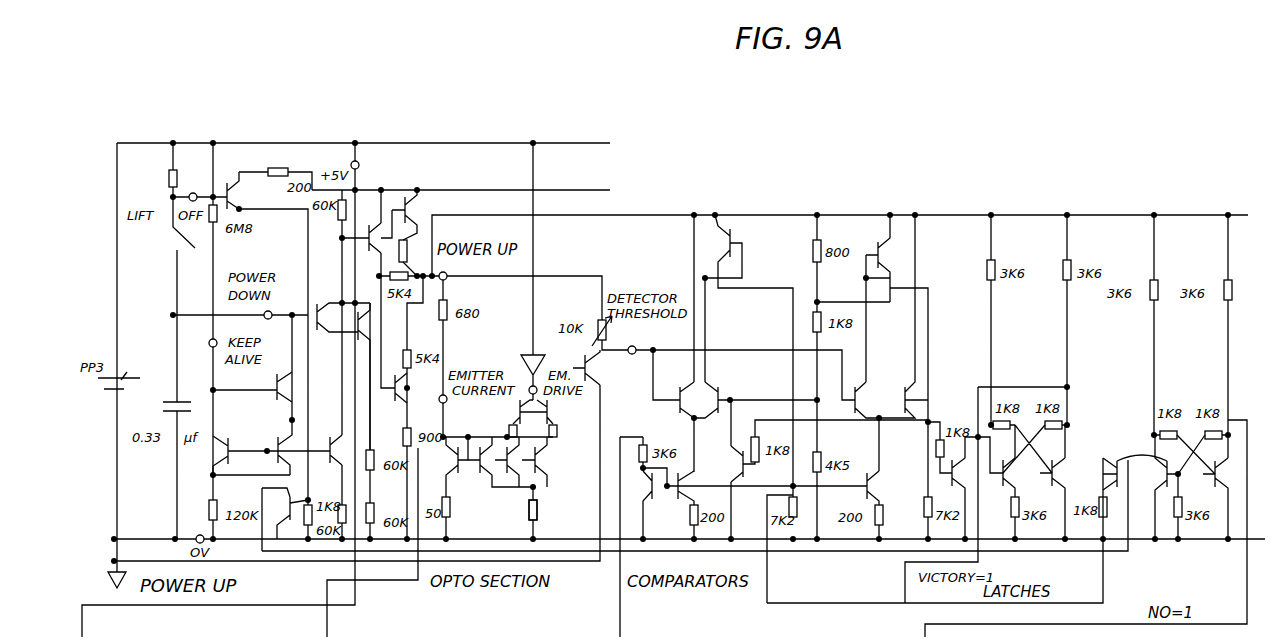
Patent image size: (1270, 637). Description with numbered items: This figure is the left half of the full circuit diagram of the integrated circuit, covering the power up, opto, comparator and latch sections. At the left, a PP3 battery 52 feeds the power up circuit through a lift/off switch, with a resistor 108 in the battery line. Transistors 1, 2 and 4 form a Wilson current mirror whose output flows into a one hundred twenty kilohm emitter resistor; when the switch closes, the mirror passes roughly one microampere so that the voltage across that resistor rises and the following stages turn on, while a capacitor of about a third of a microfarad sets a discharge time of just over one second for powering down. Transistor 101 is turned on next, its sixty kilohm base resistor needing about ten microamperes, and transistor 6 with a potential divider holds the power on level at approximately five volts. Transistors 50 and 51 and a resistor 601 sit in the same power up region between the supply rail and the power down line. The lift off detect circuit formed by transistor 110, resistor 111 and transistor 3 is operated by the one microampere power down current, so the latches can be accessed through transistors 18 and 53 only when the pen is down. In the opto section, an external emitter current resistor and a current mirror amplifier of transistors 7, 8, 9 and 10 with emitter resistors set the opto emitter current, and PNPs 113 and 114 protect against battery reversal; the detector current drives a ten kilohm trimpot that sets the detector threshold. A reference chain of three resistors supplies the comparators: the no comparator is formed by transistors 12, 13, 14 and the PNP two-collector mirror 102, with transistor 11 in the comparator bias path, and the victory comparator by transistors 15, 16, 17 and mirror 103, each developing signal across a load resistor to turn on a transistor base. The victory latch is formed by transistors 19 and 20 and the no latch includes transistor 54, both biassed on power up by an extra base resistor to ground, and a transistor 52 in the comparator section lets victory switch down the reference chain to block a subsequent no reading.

The transistor 1 is at (288, 387).
The transistor 2 is at (216, 455).
The transistor 3 is at (285, 519).
The transistor 4 is at (310, 447).
The transistor 6 is at (392, 388).
The transistor 7 is at (454, 488).
The transistor 8 is at (500, 462).
The transistor 9 is at (509, 462).
The transistor 10 is at (543, 462).
The comparator transistor 11 is at (646, 505).
The transistor 12 is at (557, 364).
The transistor 13 is at (690, 400).
The transistor 14 is at (712, 400).
The transistor 15 is at (879, 505).
The transistor 16 is at (692, 451).
The transistor 17 is at (897, 316).
The transistor 18 is at (962, 488).
The transistor 19 is at (1000, 482).
The transistor 20 is at (1065, 498).
The transistor 50 is at (337, 317).
The transistor 51 is at (366, 376).
The transistor 52 is at (426, 413).
The transistor 53 is at (1135, 472).
The transistor 54 is at (1188, 487).
The transistor 101 is at (382, 238).
The transistor 102 is at (748, 356).
The transistor 103 is at (890, 258).
The resistor 108 is at (158, 178).
The transistor 110 is at (241, 190).
The resistor 111 is at (275, 181).
The PNP transistor 113 is at (515, 412).
The PNP transistor 114 is at (556, 412).
The resistor 601 is at (416, 258).